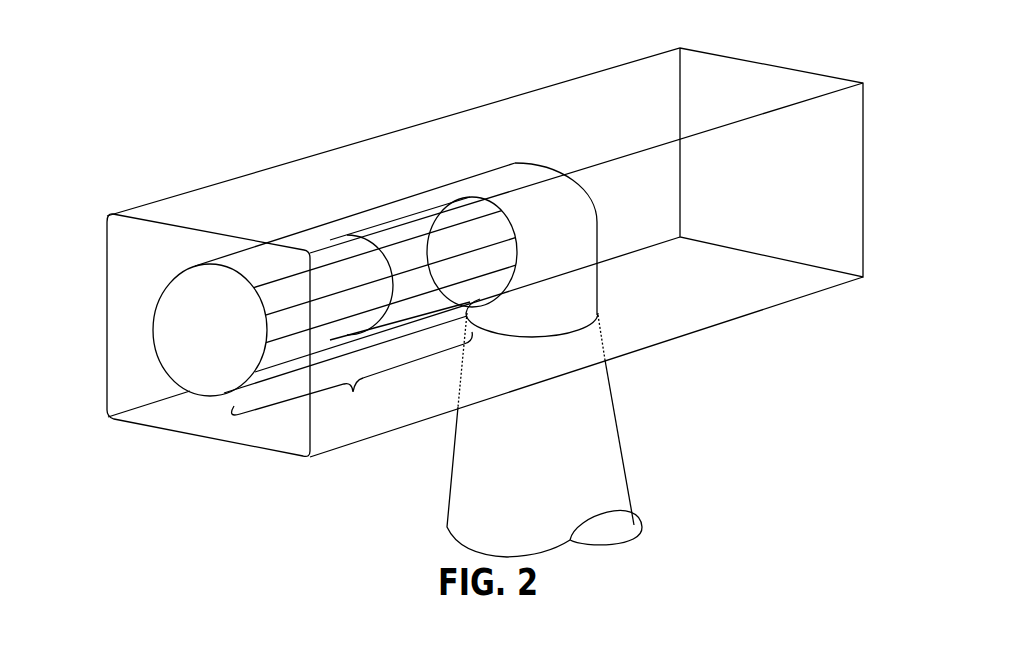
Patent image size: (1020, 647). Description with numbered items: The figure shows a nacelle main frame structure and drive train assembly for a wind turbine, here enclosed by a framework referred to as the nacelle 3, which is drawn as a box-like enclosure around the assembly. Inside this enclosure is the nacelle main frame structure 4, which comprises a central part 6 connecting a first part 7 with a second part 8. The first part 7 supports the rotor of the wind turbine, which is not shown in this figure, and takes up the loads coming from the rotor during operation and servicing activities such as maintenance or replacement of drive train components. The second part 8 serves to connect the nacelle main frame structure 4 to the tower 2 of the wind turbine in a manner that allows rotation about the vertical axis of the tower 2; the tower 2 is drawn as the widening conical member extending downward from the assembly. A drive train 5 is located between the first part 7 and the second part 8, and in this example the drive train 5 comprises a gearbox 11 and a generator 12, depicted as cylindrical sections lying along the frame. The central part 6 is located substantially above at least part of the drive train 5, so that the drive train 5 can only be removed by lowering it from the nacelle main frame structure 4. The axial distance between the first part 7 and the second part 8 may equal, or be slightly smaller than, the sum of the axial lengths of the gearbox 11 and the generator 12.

The tower 2 is at (592, 455).
The nacelle 3 is at (633, 95).
The nacelle main frame structure 4 is at (337, 214).
The drive train 5 is at (352, 380).
The central part 6 is at (368, 215).
The first part 7 is at (182, 328).
The second part 8 is at (535, 210).
The gearbox 11 is at (313, 308).
The generator 12 is at (402, 260).